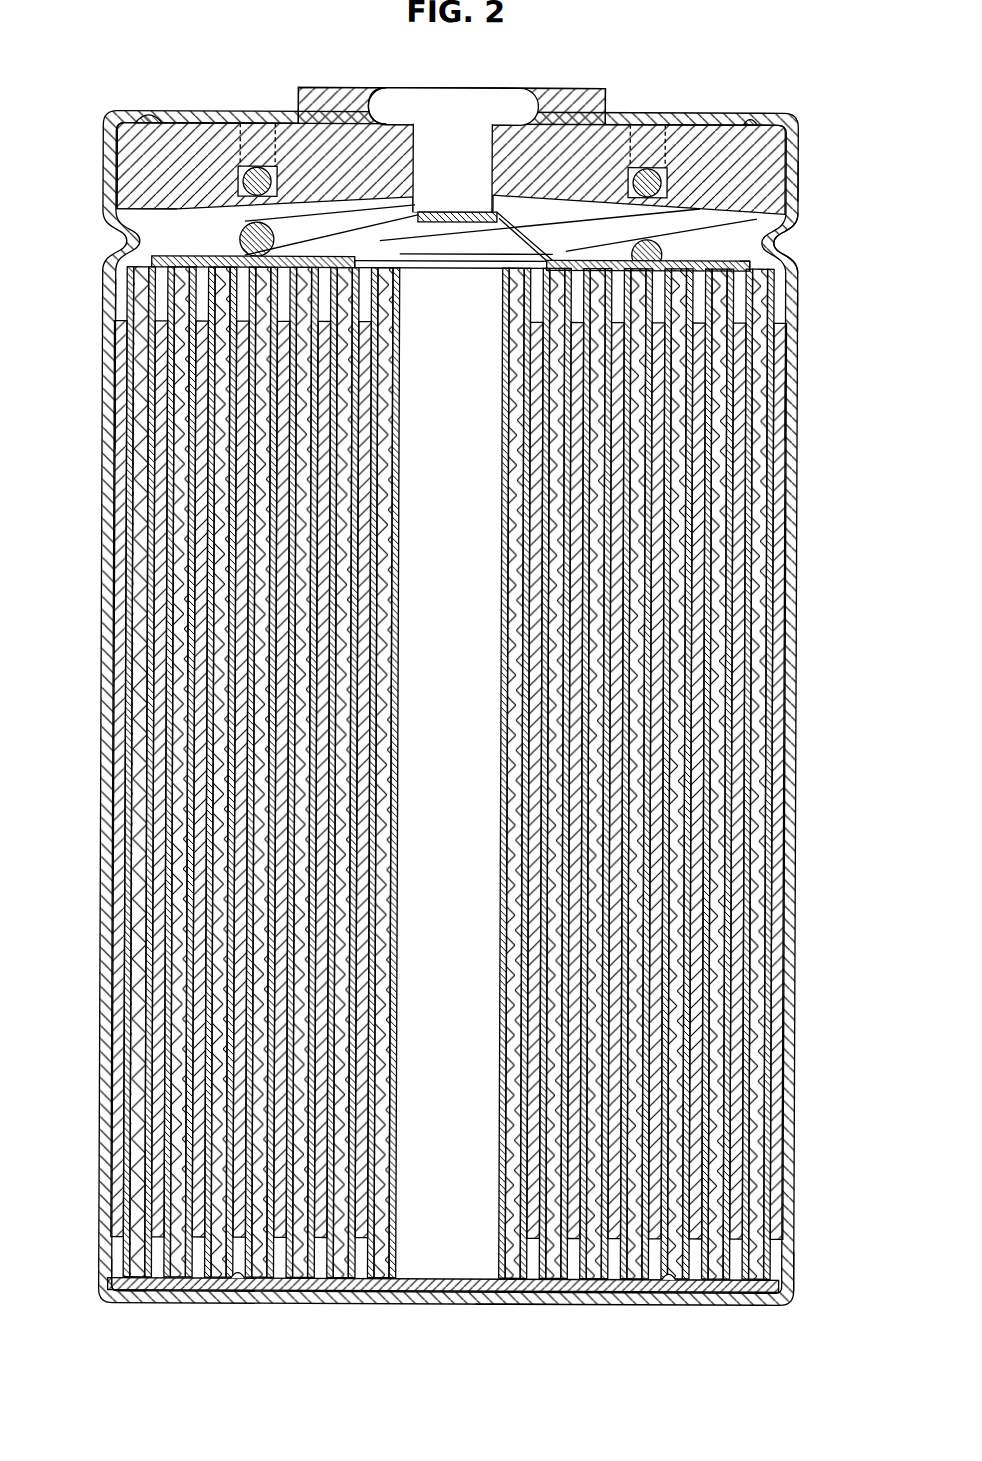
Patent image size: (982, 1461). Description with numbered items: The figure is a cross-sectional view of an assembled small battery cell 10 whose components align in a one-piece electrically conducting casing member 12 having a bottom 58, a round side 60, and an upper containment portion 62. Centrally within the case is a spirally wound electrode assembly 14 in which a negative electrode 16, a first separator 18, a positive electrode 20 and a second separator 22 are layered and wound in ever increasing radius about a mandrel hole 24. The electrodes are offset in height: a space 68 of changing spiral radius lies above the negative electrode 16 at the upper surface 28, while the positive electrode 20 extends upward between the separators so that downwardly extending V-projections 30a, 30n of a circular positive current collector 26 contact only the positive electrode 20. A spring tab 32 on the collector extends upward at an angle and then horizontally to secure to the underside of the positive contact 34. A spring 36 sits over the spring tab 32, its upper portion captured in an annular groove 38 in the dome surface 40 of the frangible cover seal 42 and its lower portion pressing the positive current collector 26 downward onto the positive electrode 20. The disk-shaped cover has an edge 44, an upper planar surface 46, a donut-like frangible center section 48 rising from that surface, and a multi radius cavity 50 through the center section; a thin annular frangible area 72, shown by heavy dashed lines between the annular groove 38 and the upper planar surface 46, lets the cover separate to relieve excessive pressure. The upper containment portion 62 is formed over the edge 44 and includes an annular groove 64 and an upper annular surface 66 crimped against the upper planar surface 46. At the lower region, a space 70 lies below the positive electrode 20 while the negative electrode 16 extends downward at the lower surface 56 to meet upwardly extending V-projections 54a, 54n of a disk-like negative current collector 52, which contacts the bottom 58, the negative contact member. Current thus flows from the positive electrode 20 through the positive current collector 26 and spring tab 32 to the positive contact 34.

The battery cell 10 is at (787, 97).
The casing member 12 is at (800, 437).
The spirally wound electrode assembly 14 is at (786, 412).
The negative electrode 16 is at (120, 470).
The first separator 18 is at (128, 500).
The positive electrode 20 is at (136, 528).
The second separator 22 is at (148, 578).
The mandrel hole 24 is at (437, 706).
The positive current collector 26 is at (734, 260).
The upper surface 28 is at (800, 312).
The V-projection 30a is at (252, 268).
The V-projection 30n is at (636, 276).
The spring tab 32 is at (417, 218).
The positive contact 34 is at (480, 93).
The spring 36 is at (632, 244).
The annular groove 38 is at (650, 166).
The dome surface 40 is at (287, 201).
The frangible cover seal 42 is at (705, 135).
The edge 44 is at (115, 167).
The upper planar surface 46 is at (188, 121).
The frangible center section 48 is at (604, 92).
The multi radius cavity 50 is at (368, 100).
The negative current collector 52 is at (422, 1282).
The V-projection 54a is at (242, 1296).
The V-projection 54n is at (673, 1294).
The lower surface 56 is at (800, 1271).
The bottom 58 is at (518, 1298).
The round side 60 is at (113, 424).
The upper containment portion 62 is at (802, 180).
The annular groove 64 is at (793, 243).
The upper annular surface 66 is at (143, 119).
The space 68 is at (122, 298).
The space 70 is at (137, 1260).
The thin annular frangible area 72 is at (265, 130).